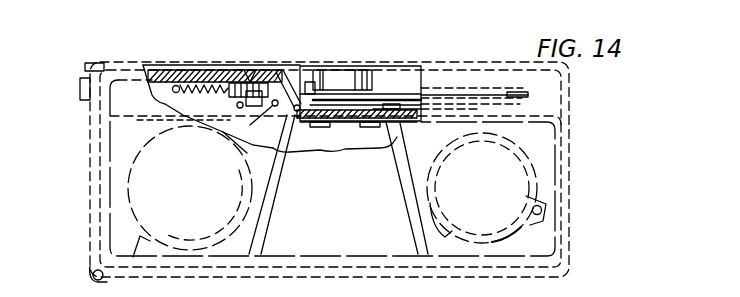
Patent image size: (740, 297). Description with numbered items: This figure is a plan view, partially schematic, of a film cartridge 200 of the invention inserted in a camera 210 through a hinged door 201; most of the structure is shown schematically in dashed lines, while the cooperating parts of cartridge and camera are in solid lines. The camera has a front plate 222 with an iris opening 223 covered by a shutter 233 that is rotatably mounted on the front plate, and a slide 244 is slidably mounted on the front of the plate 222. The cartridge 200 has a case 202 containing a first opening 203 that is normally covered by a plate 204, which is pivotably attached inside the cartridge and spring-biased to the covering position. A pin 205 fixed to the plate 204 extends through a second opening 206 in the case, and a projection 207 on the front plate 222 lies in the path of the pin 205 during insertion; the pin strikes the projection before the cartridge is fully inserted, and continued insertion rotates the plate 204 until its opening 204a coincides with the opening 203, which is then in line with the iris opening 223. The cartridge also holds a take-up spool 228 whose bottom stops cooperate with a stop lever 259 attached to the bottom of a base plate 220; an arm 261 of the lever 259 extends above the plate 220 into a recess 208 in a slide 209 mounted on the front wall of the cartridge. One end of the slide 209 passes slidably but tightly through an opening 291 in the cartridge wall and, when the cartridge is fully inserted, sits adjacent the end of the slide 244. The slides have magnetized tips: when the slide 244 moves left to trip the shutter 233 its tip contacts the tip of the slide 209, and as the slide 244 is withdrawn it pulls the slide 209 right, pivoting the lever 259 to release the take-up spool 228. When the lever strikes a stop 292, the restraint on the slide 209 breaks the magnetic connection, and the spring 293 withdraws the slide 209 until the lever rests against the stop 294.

The hinged door 201 is at (90, 170).
The case 202 is at (156, 66).
The camera 210 is at (100, 62).
The cartridge 200 is at (208, 72).
The slide 209 is at (234, 72).
The spring 293 is at (200, 72).
The recess 208 is at (246, 72).
The base plate 220 is at (165, 122).
The stop 292 is at (232, 143).
The stop 294 is at (237, 105).
The stop lever 259 is at (250, 125).
The arm 261 is at (272, 77).
The opening 291 is at (300, 82).
The front plate 222 is at (382, 94).
The pin 205 is at (332, 90).
The iris opening 223 is at (370, 90).
The slide 244 is at (398, 90).
The plate 204 is at (344, 119).
The projection 207 is at (325, 128).
The opening 204a is at (402, 141).
The first opening 203 is at (336, 150).
The second opening 206 is at (286, 118).
The shutter 233 is at (396, 150).
The take-up spool 228 is at (140, 208).